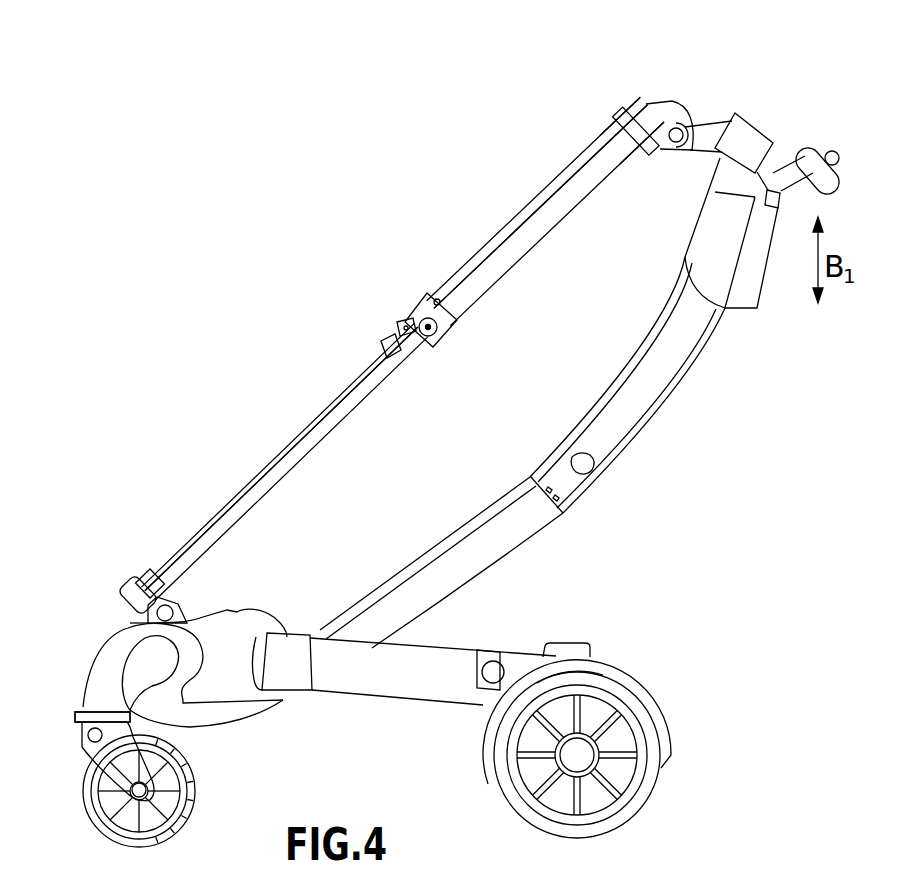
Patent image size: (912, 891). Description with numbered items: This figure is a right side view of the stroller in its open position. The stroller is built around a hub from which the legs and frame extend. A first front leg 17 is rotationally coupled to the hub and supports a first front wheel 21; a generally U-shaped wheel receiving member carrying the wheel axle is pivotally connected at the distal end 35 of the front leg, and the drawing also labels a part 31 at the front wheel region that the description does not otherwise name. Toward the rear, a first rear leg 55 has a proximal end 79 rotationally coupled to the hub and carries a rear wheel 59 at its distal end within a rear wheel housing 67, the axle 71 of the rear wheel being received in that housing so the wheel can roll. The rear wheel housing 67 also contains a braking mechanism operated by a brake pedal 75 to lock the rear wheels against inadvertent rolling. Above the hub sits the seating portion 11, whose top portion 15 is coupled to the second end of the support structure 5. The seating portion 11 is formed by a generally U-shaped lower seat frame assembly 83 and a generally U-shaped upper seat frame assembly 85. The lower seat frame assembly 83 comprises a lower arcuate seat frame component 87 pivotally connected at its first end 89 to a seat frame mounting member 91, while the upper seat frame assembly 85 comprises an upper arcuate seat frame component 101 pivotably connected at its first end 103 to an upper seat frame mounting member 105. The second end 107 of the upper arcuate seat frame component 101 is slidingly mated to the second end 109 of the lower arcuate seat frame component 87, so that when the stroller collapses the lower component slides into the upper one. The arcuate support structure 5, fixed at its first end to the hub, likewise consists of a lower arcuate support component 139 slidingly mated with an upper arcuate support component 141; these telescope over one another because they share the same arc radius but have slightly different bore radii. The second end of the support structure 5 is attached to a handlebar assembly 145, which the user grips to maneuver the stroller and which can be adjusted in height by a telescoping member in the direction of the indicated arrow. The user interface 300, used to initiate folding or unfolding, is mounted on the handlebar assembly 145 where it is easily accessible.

The support structure 5 is at (594, 488).
The seating portion 11 is at (432, 234).
The top portion 15 is at (657, 104).
The first front leg 17 is at (182, 728).
The first front wheel 21 is at (114, 838).
The front fork 31 is at (110, 763).
The distal end 35 is at (76, 725).
The first rear leg 55 is at (387, 682).
The rear wheel 59 is at (624, 810).
The rear wheel housing 67 is at (623, 684).
The axle 71 is at (576, 757).
The brake pedal 75 is at (563, 644).
The proximal end 79 is at (297, 680).
The lower seat frame assembly 83 is at (330, 456).
The upper seat frame assembly 85 is at (530, 283).
The lower arcuate seat frame component 87 is at (266, 452).
The first end 89 is at (148, 575).
The seat frame mounting member 91 is at (130, 581).
The upper arcuate seat frame component 101 is at (546, 188).
The first end 103 is at (616, 127).
The upper seat frame mounting member 105 is at (626, 104).
The second end 107 is at (395, 347).
The second end 109 is at (380, 360).
The lower arcuate support component 139 is at (494, 508).
The upper arcuate support component 141 is at (686, 374).
The handlebar assembly 145 is at (766, 113).
The user interface 300 is at (830, 150).